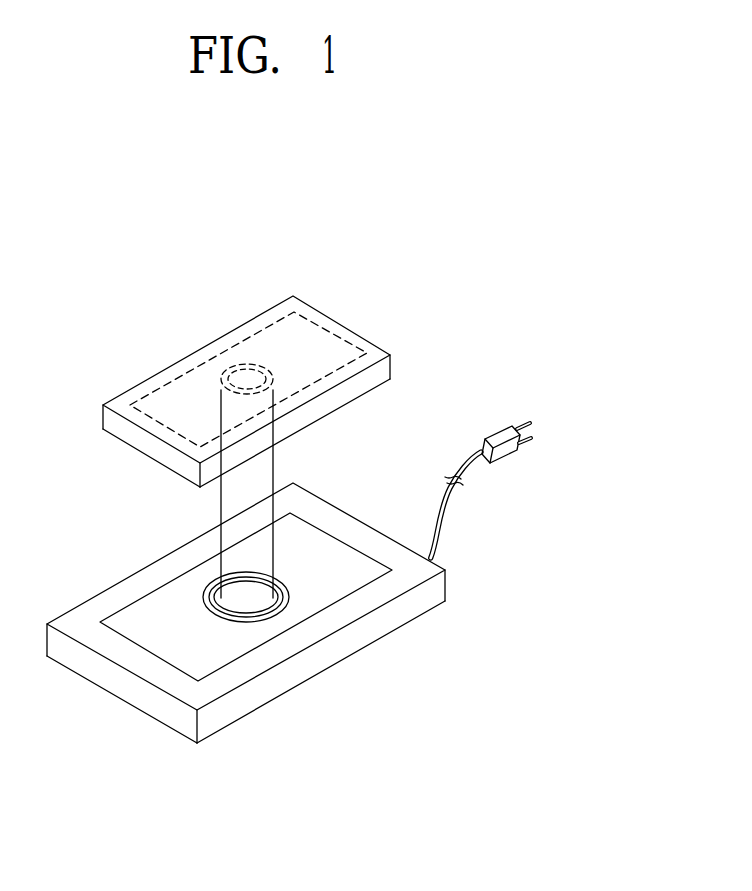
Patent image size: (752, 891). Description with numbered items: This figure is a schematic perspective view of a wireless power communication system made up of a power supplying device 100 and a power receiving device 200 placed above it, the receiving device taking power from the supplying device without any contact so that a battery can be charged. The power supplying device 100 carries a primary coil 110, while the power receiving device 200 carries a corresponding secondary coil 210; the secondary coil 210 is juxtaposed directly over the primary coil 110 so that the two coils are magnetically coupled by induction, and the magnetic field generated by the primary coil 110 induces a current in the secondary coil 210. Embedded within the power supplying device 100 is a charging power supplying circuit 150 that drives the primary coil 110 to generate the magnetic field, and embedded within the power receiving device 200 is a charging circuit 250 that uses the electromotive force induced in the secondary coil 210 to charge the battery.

The power supplying device 100 is at (462, 581).
The primary coil 110 is at (212, 580).
The charging power supplying circuit 150 is at (147, 593).
The power receiving device 200 is at (320, 283).
The secondary coil 210 is at (235, 367).
The charging circuit 250 is at (270, 323).